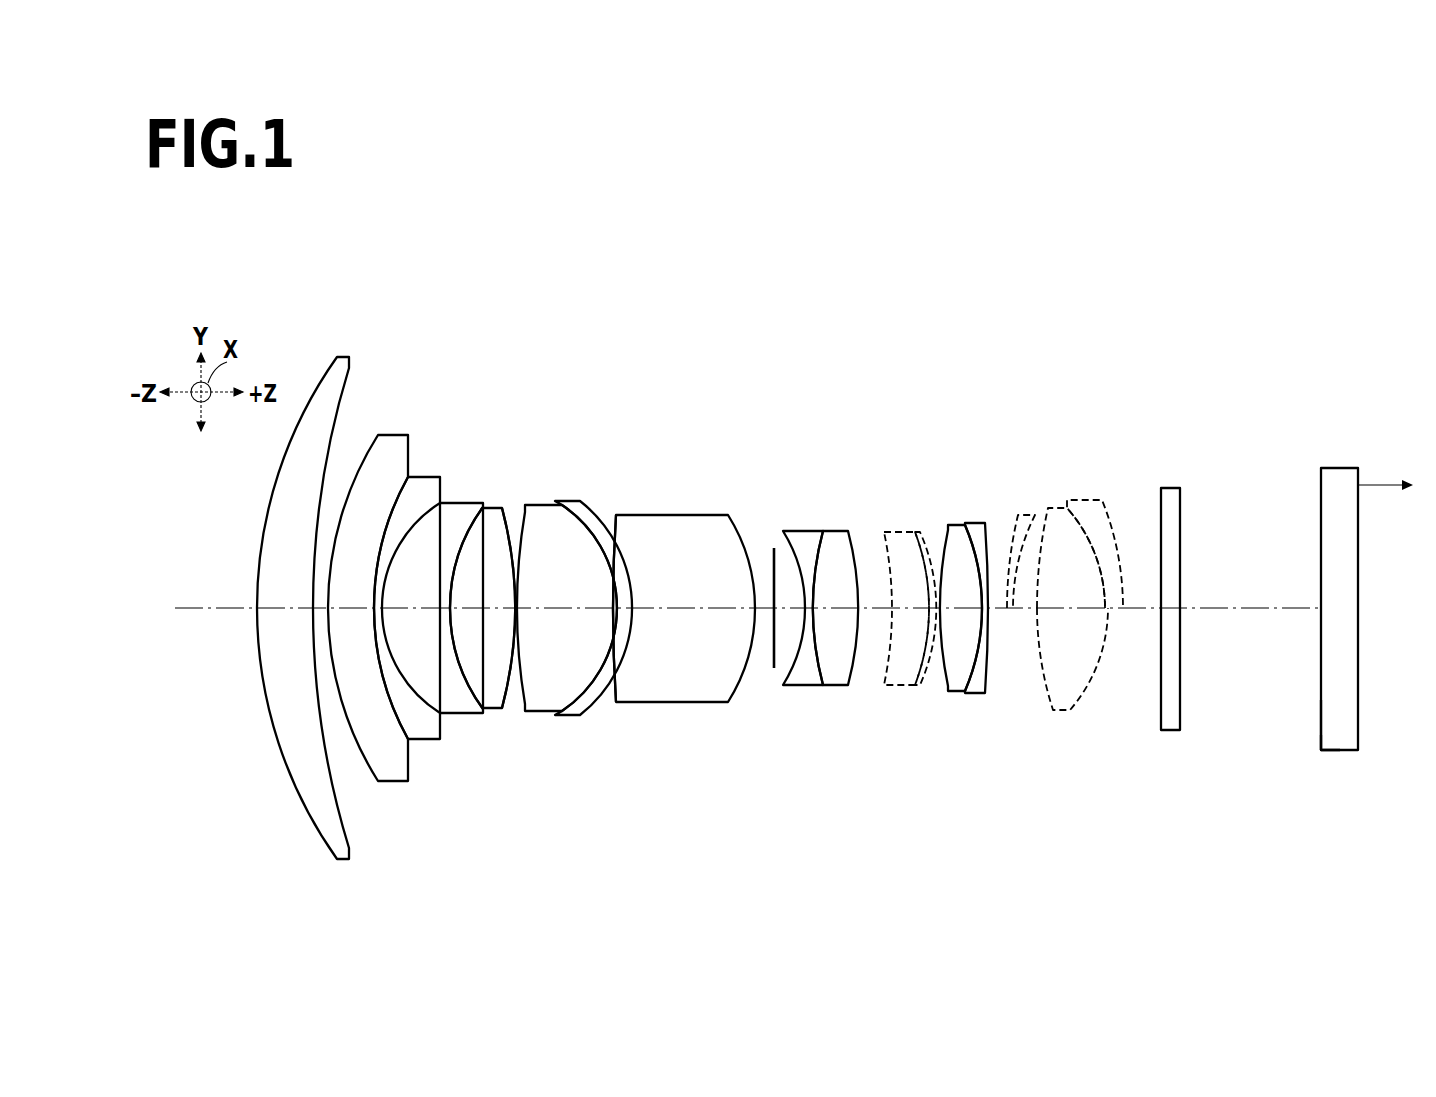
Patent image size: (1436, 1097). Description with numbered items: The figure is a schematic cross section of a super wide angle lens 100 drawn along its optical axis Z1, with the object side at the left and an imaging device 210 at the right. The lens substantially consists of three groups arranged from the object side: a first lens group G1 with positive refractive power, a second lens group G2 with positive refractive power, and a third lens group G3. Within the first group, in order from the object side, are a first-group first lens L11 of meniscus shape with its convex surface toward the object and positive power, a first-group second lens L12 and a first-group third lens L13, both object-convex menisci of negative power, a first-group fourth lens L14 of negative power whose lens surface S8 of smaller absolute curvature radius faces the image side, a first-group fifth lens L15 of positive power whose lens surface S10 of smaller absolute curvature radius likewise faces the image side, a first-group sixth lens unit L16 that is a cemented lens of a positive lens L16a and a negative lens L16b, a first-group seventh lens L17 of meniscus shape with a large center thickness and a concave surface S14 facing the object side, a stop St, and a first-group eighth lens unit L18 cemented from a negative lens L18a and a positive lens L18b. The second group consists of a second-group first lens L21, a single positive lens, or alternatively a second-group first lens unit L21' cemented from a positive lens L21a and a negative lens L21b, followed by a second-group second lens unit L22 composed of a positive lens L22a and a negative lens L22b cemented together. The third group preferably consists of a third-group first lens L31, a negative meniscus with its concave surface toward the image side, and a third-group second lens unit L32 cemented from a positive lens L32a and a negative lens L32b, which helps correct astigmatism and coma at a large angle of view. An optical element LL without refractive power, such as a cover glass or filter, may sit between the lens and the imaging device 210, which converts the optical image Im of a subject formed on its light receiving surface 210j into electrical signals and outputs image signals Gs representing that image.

The super wide angle lens 100 is at (1289, 209).
The optical axis Z1 is at (197, 605).
The first lens group G1 is at (860, 261).
The first-group first lens L11 is at (340, 357).
The first-group second lens L12 is at (386, 435).
The first-group third lens L13 is at (425, 477).
The first-group fourth lens L14 is at (460, 503).
The first-group fifth lens L15 is at (494, 508).
The first-group sixth lens unit L16 is at (627, 334).
The lens L16a is at (536, 505).
The lens L16b is at (572, 501).
The first-group seventh lens L17 is at (665, 515).
The first-group eighth lens unit L18 is at (860, 334).
The lens L18a is at (790, 531).
The lens L18b is at (834, 531).
The lens surface S8 is at (467, 683).
The lens surface S10 is at (505, 704).
The concave surface S14 is at (620, 682).
The stop St is at (773, 556).
The second lens group G2 is at (1028, 261).
The second-group first lens L21 is at (901, 521).
The lens L21a is at (895, 688).
The lens L21b is at (917, 686).
The second-group first lens unit L21' is at (900, 541).
The second-group second lens unit L22 is at (1028, 334).
The lens L22a is at (955, 525).
The lens L22b is at (977, 523).
The third lens group G3 is at (1195, 261).
The third-group first lens L31 is at (1026, 515).
The third-group second lens unit L32 is at (1195, 334).
The lens L32a is at (1057, 508).
The lens L32b is at (1088, 500).
The optical element LL is at (1171, 488).
The imaging device 210 is at (1343, 467).
The light receiving surface 210j is at (1321, 735).
The optical image Im is at (1321, 727).
The image signals Gs is at (1385, 499).